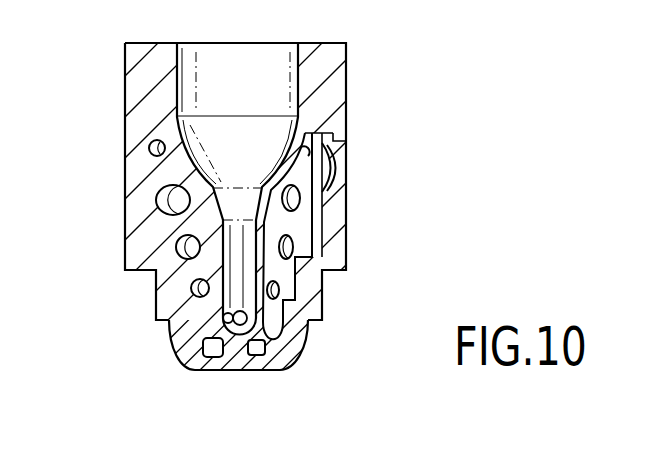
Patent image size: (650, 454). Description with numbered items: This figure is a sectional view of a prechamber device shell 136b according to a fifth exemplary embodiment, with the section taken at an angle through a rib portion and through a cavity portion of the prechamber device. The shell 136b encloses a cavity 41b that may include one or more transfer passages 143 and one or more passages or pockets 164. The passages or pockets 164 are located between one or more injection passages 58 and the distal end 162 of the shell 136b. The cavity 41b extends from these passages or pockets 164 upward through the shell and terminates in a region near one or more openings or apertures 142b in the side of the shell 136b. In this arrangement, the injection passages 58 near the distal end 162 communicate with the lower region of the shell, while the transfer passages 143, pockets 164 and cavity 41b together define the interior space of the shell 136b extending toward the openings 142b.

The prechamber shell 136b is at (125, 72).
The openings or apertures 142b is at (337, 189).
The cavity 41b is at (313, 236).
The transfer passages 143 is at (265, 347).
The injection passages 58 is at (173, 342).
The distal end 162 is at (208, 369).
The passages or pockets 164 is at (288, 335).